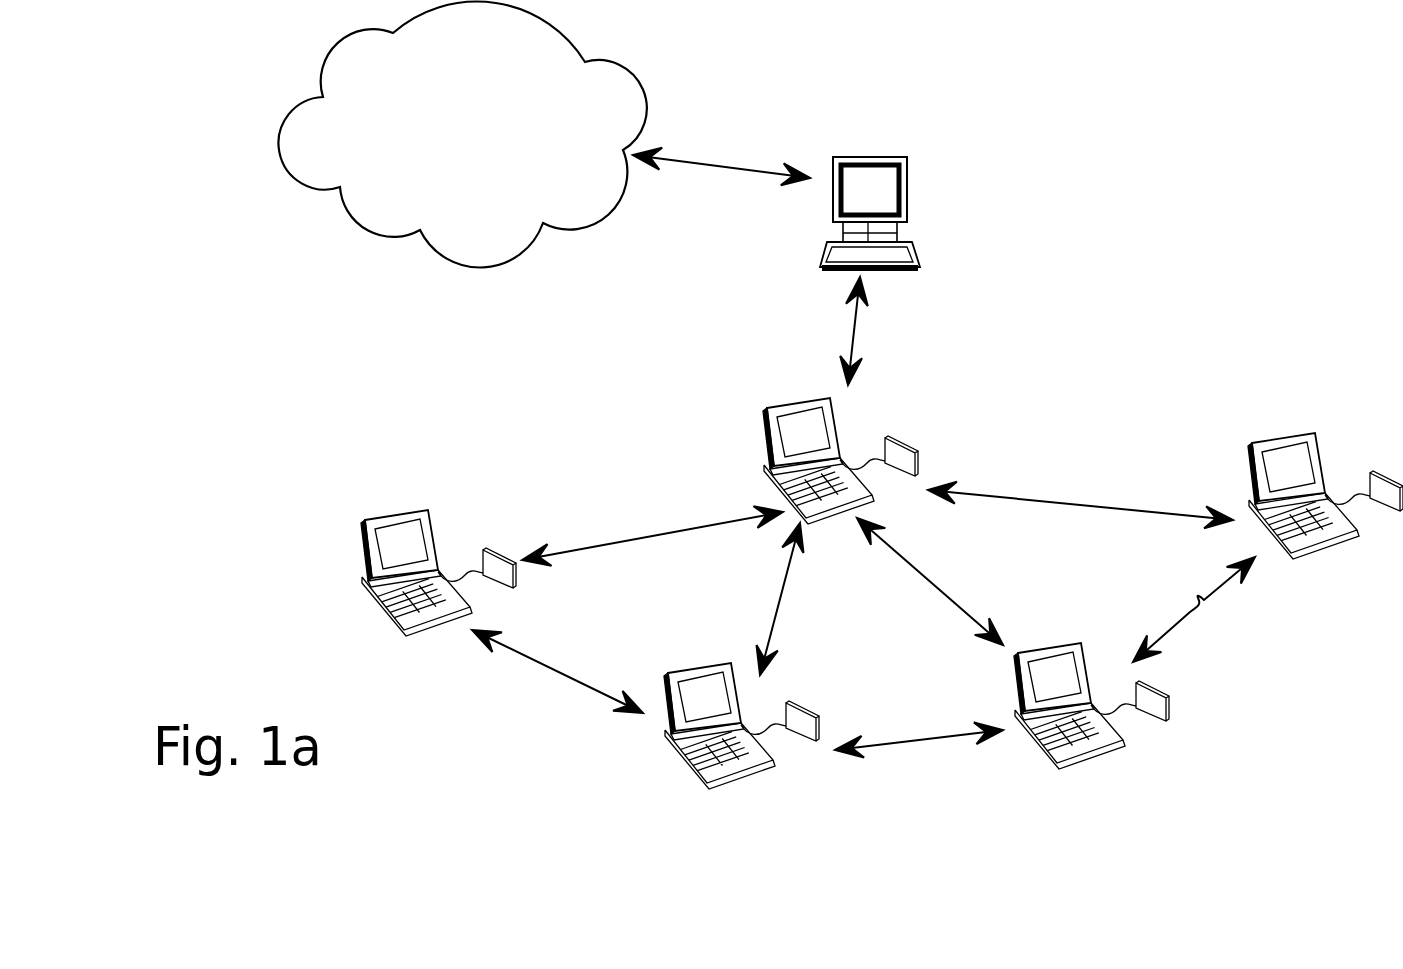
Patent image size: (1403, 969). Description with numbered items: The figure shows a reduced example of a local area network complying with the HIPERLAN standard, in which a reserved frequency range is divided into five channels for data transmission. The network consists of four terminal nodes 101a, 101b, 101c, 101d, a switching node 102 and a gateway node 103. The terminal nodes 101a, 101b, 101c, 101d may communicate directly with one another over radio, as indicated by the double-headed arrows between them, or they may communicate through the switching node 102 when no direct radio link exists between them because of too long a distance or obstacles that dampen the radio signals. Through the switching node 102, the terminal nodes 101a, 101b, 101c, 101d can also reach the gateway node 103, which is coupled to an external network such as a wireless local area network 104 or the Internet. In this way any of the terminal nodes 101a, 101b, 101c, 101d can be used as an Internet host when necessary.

The wireless local area network 104 is at (417, 233).
The gateway node 103 is at (880, 167).
The switching node 102 is at (767, 420).
The terminal node 101a is at (412, 630).
The terminal node 101b is at (720, 780).
The terminal node 101c is at (1058, 763).
The terminal node 101d is at (1252, 448).